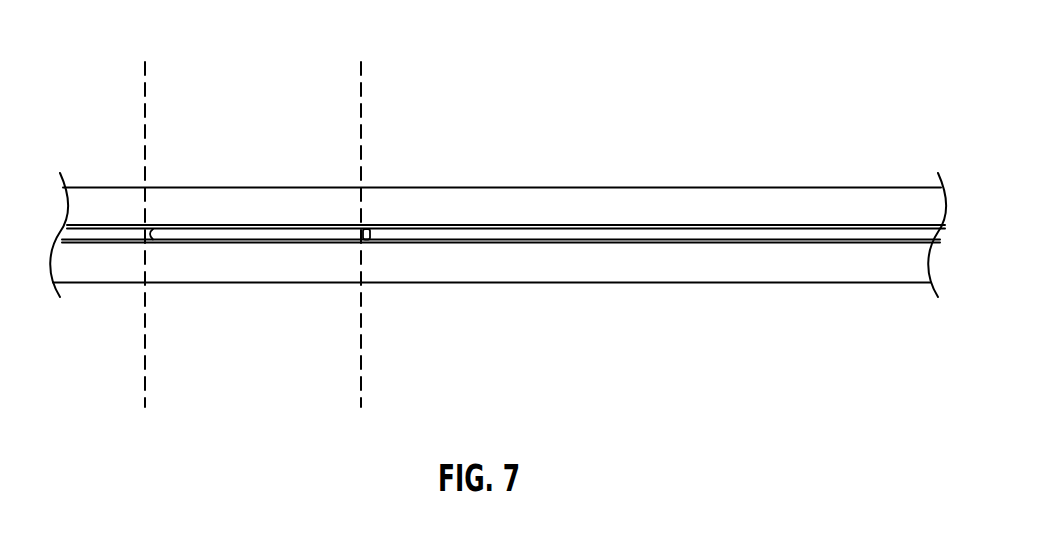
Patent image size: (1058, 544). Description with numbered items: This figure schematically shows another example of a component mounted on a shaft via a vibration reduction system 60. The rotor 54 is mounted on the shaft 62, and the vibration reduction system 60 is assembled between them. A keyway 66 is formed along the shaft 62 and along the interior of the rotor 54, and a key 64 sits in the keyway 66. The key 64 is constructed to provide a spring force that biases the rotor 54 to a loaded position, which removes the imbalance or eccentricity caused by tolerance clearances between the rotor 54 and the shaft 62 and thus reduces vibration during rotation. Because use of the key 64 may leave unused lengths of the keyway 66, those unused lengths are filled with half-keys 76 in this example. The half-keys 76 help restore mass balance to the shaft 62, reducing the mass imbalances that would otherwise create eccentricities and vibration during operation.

The rotor 54 is at (145, 97).
The vibration reduction system 60 is at (423, 224).
The shaft 62 is at (267, 187).
The key 64 is at (252, 233).
The keyway 66 is at (565, 225).
The half-keys 76 is at (83, 235).